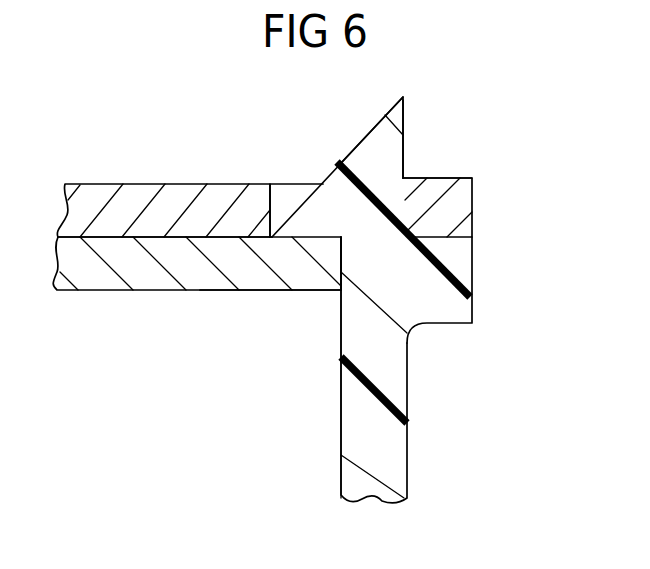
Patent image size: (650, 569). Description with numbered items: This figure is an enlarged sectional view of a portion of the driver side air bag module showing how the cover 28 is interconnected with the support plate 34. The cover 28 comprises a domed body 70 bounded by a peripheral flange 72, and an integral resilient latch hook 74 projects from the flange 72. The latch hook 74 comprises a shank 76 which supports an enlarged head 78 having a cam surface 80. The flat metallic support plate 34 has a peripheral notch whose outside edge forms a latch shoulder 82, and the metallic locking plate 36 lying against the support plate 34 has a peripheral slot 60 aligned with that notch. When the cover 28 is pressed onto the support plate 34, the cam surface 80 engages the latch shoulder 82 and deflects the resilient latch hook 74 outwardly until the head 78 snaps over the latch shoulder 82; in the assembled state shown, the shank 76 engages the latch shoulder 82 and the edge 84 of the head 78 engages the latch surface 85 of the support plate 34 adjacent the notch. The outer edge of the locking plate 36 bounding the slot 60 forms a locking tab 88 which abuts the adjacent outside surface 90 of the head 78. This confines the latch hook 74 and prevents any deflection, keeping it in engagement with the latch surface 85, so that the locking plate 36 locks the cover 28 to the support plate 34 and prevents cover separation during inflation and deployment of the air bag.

The cover 28 is at (341, 432).
The support plate 34 is at (92, 291).
The locking plate 36 is at (87, 184).
The peripheral slot 60 is at (277, 197).
The domed body 70 is at (395, 461).
The peripheral flange 72 is at (458, 257).
The latch hook 74 is at (407, 100).
The shank 76 is at (344, 259).
The head 78 is at (404, 147).
The cam surface 80 is at (361, 142).
The latch shoulder 82 is at (343, 272).
The edge of head 84 is at (290, 270).
The latch surface 85 is at (313, 235).
The locking tab 88 is at (460, 201).
The outside surface 90 is at (418, 200).